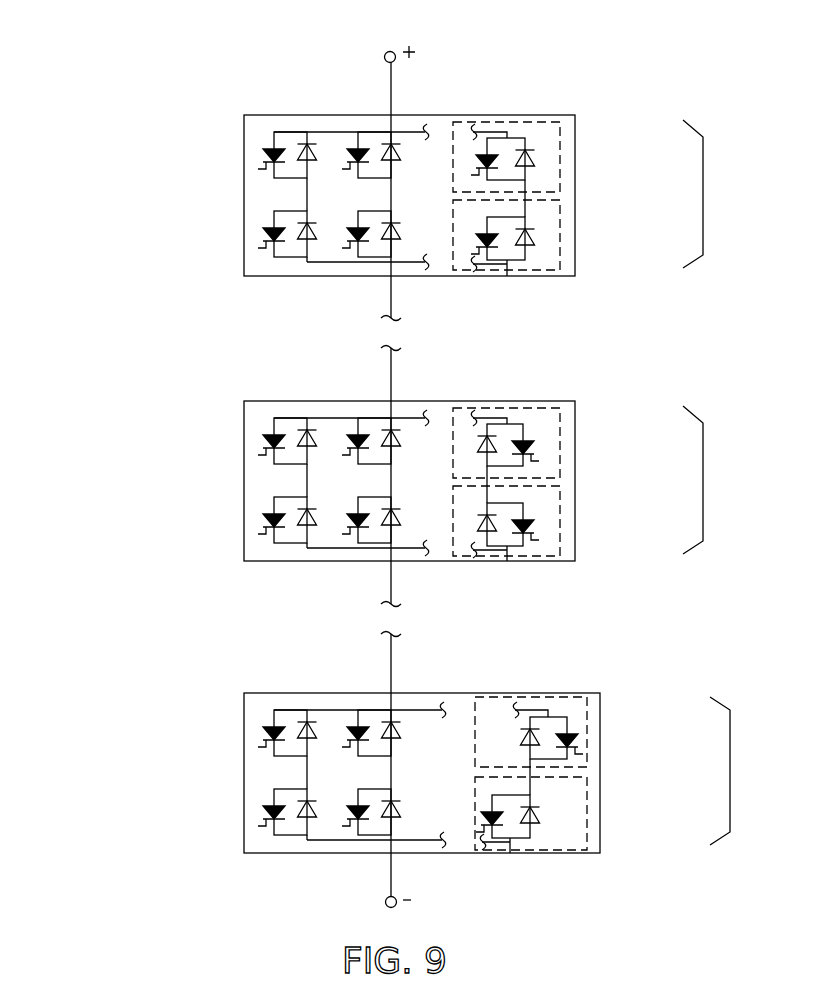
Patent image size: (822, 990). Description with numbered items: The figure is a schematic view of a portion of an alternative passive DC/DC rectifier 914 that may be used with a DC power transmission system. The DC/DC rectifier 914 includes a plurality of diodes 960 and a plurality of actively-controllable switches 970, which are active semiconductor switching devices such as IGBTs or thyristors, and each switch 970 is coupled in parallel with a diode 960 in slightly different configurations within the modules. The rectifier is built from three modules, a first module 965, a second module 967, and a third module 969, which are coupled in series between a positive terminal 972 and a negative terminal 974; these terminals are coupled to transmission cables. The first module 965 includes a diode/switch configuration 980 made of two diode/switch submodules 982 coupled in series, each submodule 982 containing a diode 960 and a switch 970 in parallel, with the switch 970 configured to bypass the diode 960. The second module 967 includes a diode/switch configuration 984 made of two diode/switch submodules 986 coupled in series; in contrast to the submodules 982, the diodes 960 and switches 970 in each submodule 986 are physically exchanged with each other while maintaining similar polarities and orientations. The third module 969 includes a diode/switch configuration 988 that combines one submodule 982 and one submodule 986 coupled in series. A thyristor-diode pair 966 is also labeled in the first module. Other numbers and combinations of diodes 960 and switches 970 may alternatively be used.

The passive DC/DC rectifier 914 is at (130, 90).
The diode 960 is at (535, 232).
The first module 965 is at (323, 115).
The thyristor-diode switching cell 966 is at (535, 146).
The second module 967 is at (322, 401).
The third module 969 is at (322, 693).
The actively-controllable switch 970 is at (478, 237).
The positive terminal 972 is at (385, 52).
The negative terminal 974 is at (385, 904).
The diode/switch configuration 980 is at (703, 195).
The diode/switch submodule 982 is at (560, 133).
The diode/switch configuration 984 is at (703, 481).
The diode/switch submodule 986 is at (560, 419).
The diode/switch configuration 988 is at (730, 771).